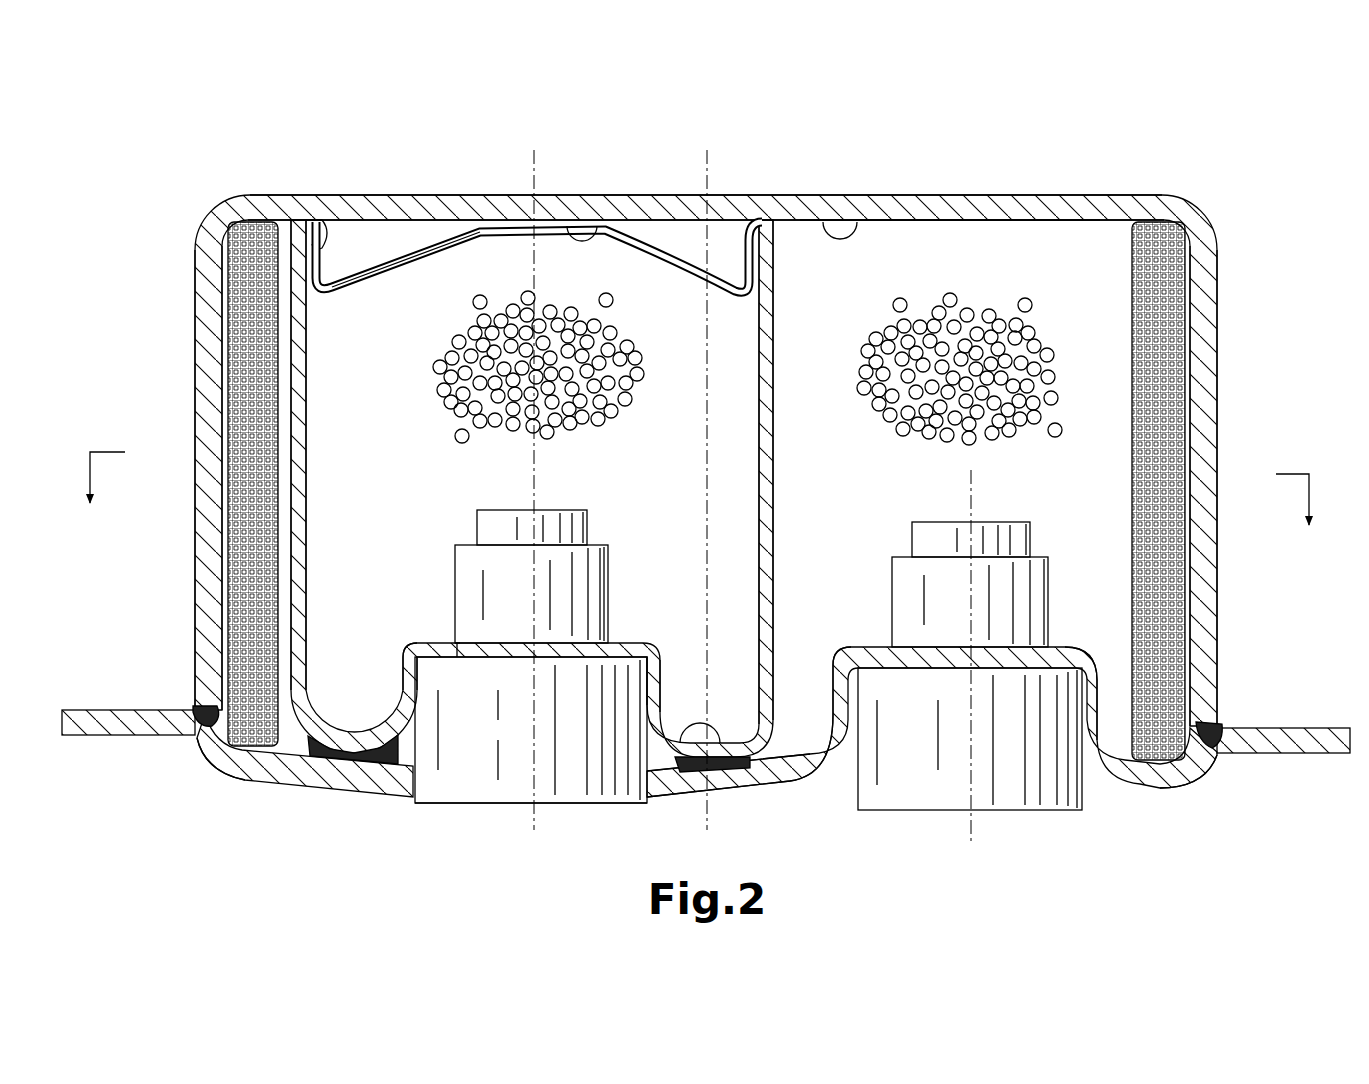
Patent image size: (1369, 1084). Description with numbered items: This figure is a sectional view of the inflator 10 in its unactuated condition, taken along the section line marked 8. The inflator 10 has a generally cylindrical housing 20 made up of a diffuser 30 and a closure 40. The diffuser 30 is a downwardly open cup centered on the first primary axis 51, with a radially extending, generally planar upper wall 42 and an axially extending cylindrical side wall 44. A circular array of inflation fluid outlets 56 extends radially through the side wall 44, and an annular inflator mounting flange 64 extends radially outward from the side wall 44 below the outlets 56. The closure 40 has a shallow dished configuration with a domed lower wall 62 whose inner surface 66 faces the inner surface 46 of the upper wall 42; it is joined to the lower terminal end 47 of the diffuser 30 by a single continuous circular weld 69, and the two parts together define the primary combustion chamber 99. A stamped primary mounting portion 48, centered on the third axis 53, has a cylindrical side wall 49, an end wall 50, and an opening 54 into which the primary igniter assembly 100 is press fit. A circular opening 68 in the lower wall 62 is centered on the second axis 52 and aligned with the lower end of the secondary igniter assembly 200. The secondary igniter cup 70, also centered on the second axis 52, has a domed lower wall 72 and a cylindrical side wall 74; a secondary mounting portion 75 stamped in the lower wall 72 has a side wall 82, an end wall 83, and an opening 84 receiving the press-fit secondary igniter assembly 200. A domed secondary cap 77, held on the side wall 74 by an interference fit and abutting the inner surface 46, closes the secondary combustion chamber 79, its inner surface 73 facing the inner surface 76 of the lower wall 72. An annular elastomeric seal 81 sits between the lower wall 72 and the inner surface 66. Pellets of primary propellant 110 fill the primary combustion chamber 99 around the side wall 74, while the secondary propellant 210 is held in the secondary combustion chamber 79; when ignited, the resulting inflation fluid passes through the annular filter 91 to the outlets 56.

The inflator 10 is at (232, 125).
The housing 20 is at (216, 198).
The diffuser 30 is at (1075, 216).
The closure 40 is at (1168, 777).
The upper wall 42 is at (478, 208).
The side wall 44 is at (208, 548).
The inner surface 46 is at (856, 236).
The lower terminal end 47 is at (205, 680).
The primary mounting portion 48 is at (848, 660).
The side wall 49 is at (840, 708).
The end wall 50 is at (1052, 655).
The first primary axis 51 is at (715, 172).
The second axis 52 is at (547, 160).
The third axis 53 is at (985, 830).
The opening 54 is at (912, 650).
The inflation fluid outlets 56 is at (210, 352).
The lower wall 62 is at (287, 768).
The inflator mounting flange 64 is at (80, 722).
The inner surface 66 is at (793, 760).
The circular opening 68 is at (428, 788).
The weld 69 is at (207, 722).
The secondary igniter cup 70 is at (775, 392).
The lower wall 72 is at (430, 745).
The inner surface 73 is at (598, 240).
The side wall 74 is at (305, 386).
The secondary mounting portion 75 is at (415, 655).
The inner surface 76 is at (680, 752).
The secondary cap 77 is at (397, 232).
The secondary combustion chamber 79 is at (392, 290).
The annular elastomeric seal 81 is at (367, 767).
The side wall 82 is at (402, 690).
The end wall 83 is at (615, 652).
The opening 84 is at (468, 640).
The annular filter 91 is at (240, 268).
The primary combustion chamber 99 is at (927, 263).
The primary igniter assembly 100 is at (896, 530).
The primary propellant 110 is at (1050, 435).
The secondary igniter assembly 200 is at (468, 522).
The secondary propellant 210 is at (632, 420).
The section line 8 is at (697, 506).